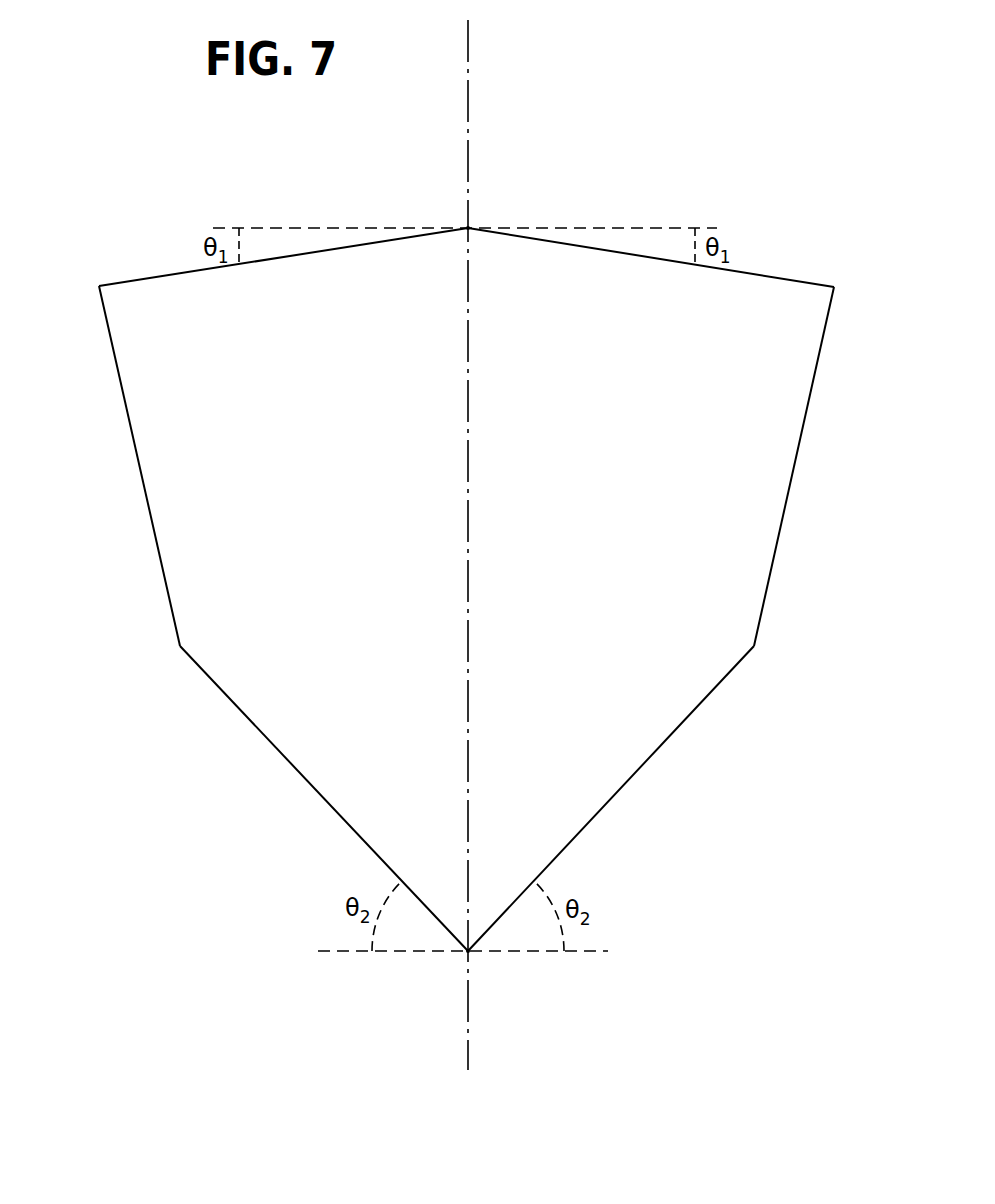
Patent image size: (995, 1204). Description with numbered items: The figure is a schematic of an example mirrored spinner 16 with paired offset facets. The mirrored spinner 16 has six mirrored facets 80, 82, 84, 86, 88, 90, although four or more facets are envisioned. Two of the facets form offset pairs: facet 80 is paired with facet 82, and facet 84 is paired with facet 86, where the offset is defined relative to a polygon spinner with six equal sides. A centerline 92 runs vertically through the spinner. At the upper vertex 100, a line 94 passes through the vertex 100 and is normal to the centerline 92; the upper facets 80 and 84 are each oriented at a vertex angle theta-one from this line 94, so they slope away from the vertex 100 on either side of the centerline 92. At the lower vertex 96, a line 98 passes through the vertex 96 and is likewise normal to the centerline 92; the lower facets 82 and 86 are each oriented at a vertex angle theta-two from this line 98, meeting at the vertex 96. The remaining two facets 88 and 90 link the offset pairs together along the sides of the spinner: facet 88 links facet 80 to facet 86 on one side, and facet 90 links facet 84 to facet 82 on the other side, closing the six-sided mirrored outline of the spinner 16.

The mirrored spinner 16 is at (468, 486).
The mirrored facet 80 is at (150, 278).
The mirrored facet 82 is at (637, 772).
The mirrored facet 84 is at (786, 277).
The mirrored facet 86 is at (282, 758).
The mirrored facet 88 is at (145, 496).
The mirrored facet 90 is at (793, 477).
The centerline 92 is at (470, 100).
The line 94 is at (333, 225).
The vertex 96 is at (470, 955).
The line 98 is at (408, 953).
The vertex 100 is at (470, 226).